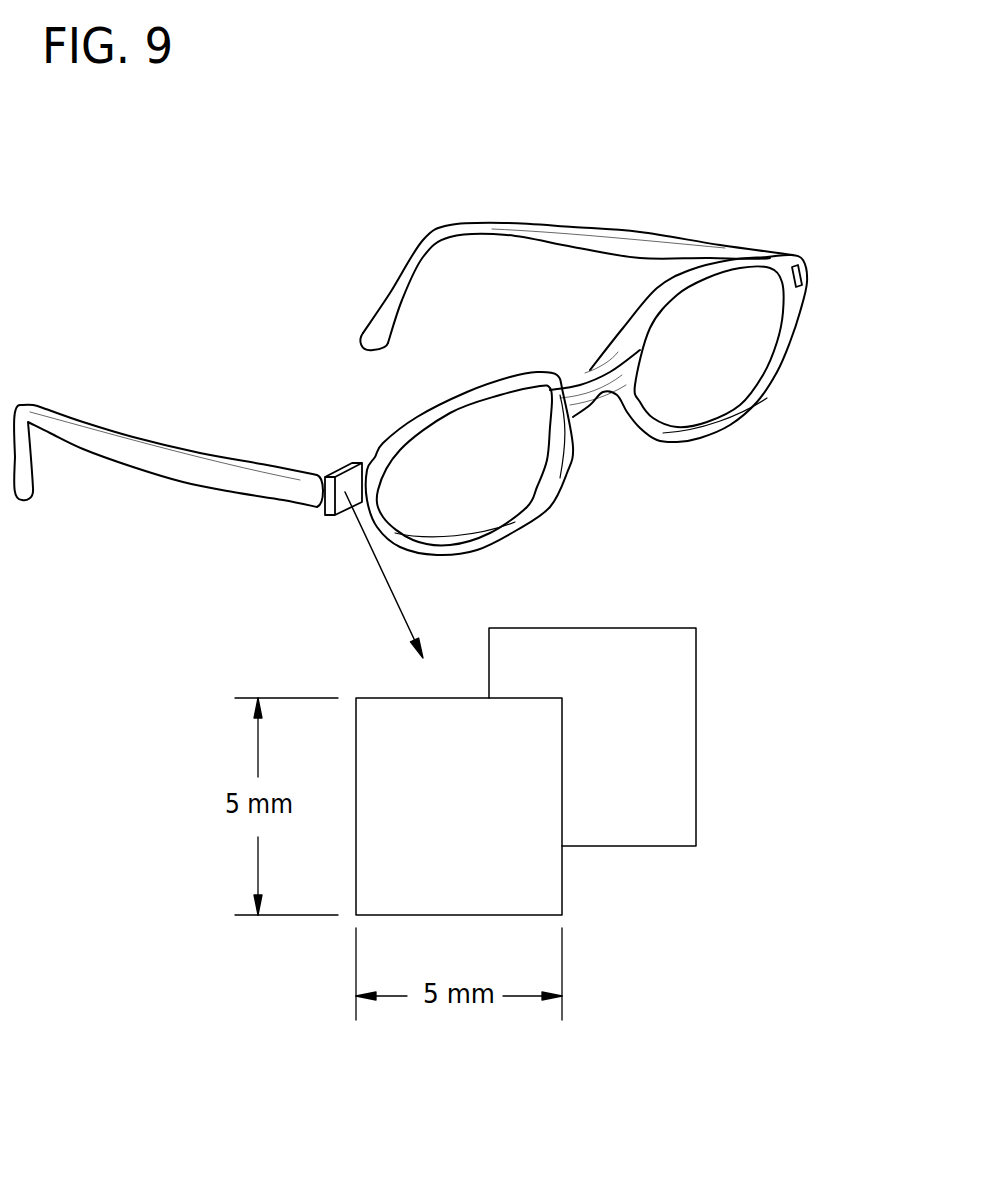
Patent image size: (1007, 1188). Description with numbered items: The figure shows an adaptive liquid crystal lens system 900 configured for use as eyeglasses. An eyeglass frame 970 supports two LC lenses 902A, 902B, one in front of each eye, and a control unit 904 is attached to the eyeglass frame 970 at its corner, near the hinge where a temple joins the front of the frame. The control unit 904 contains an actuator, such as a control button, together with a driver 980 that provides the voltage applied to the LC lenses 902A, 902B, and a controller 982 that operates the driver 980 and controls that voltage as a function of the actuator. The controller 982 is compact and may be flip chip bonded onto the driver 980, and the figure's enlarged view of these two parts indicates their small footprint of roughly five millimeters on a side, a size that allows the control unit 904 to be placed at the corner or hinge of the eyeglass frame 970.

The LC lens system 900 is at (744, 119).
The LC lens 902A is at (497, 470).
The LC lens 902B is at (722, 382).
The control unit 904 is at (357, 478).
The eyeglass frame 970 is at (797, 298).
The driver 980 is at (675, 723).
The controller 982 is at (542, 878).